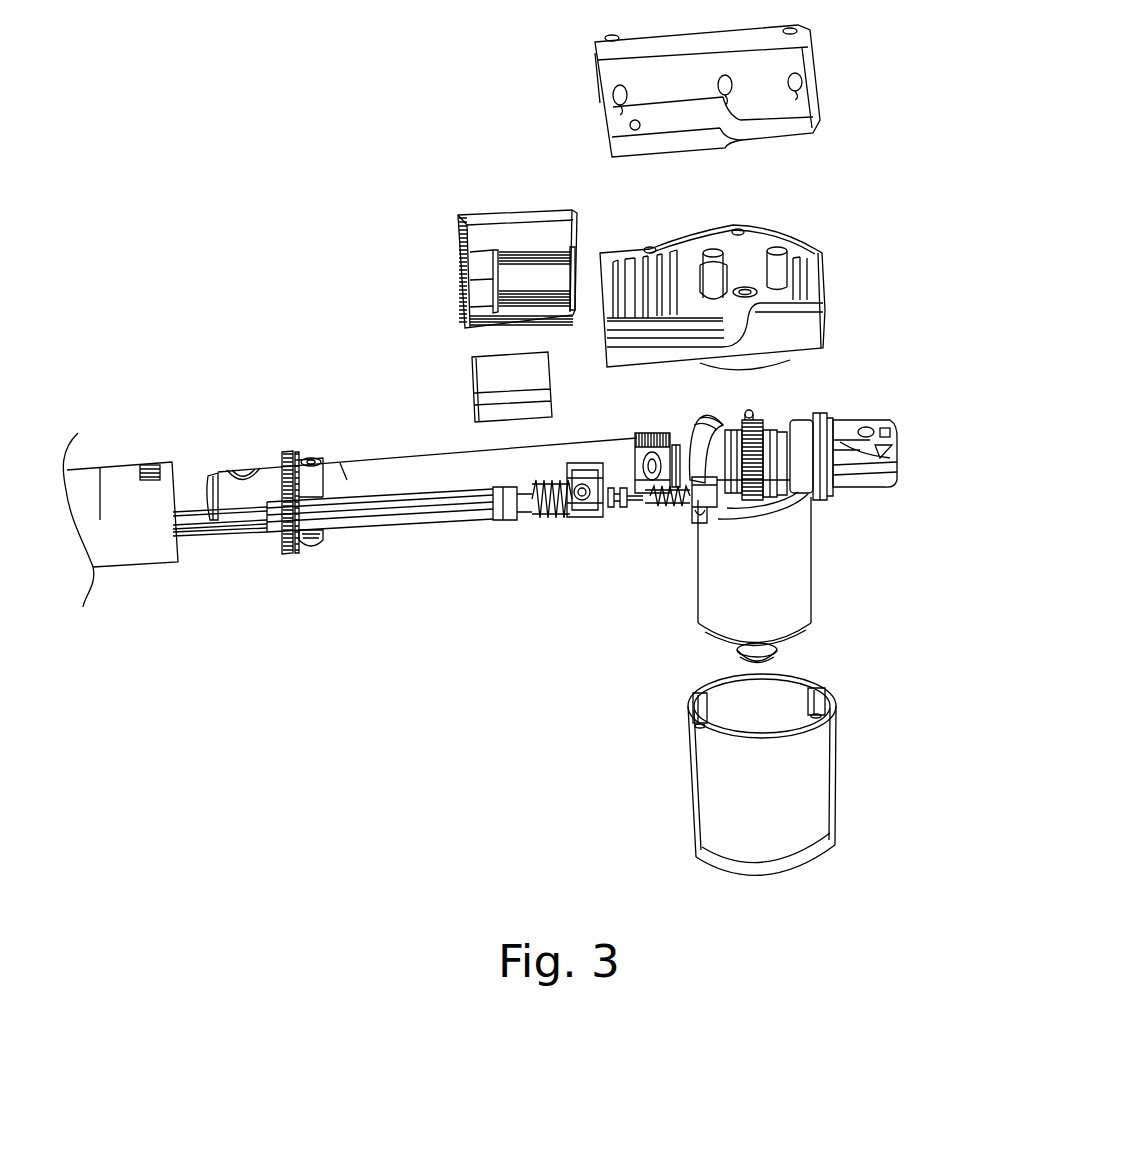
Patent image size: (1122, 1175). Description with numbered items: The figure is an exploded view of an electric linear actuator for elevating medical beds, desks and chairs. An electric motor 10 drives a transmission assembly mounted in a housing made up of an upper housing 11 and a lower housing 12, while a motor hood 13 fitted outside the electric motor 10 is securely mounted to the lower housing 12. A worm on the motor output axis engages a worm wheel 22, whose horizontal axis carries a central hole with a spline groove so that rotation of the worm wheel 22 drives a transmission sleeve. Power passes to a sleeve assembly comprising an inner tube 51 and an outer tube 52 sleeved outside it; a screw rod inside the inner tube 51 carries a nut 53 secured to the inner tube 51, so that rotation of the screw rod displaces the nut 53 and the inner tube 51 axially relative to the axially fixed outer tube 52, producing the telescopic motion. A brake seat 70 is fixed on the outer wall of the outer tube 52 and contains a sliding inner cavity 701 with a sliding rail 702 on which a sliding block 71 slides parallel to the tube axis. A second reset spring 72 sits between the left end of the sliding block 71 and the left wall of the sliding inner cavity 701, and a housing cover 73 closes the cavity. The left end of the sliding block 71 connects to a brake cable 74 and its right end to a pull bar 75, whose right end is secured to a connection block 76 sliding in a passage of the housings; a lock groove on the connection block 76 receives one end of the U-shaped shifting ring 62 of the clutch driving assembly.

The electric motor 10 is at (773, 590).
The upper housing 11 is at (760, 68).
The lower housing 12 is at (805, 327).
The motor hood 13 is at (788, 775).
The worm wheel 22 is at (767, 430).
The inner tube 51 is at (350, 480).
The outer tube 52 is at (148, 500).
The nut 53 is at (653, 433).
The shifting ring 62 is at (715, 410).
The brake seat 70 is at (442, 231).
The sliding inner cavity 701 is at (520, 282).
The sliding rail 702 is at (563, 307).
The sliding block 71 is at (598, 522).
The second reset spring 72 is at (542, 522).
The housing cover 73 is at (478, 378).
The brake cable 74 is at (417, 523).
The pull bar 75 is at (647, 503).
The connection block 76 is at (717, 502).